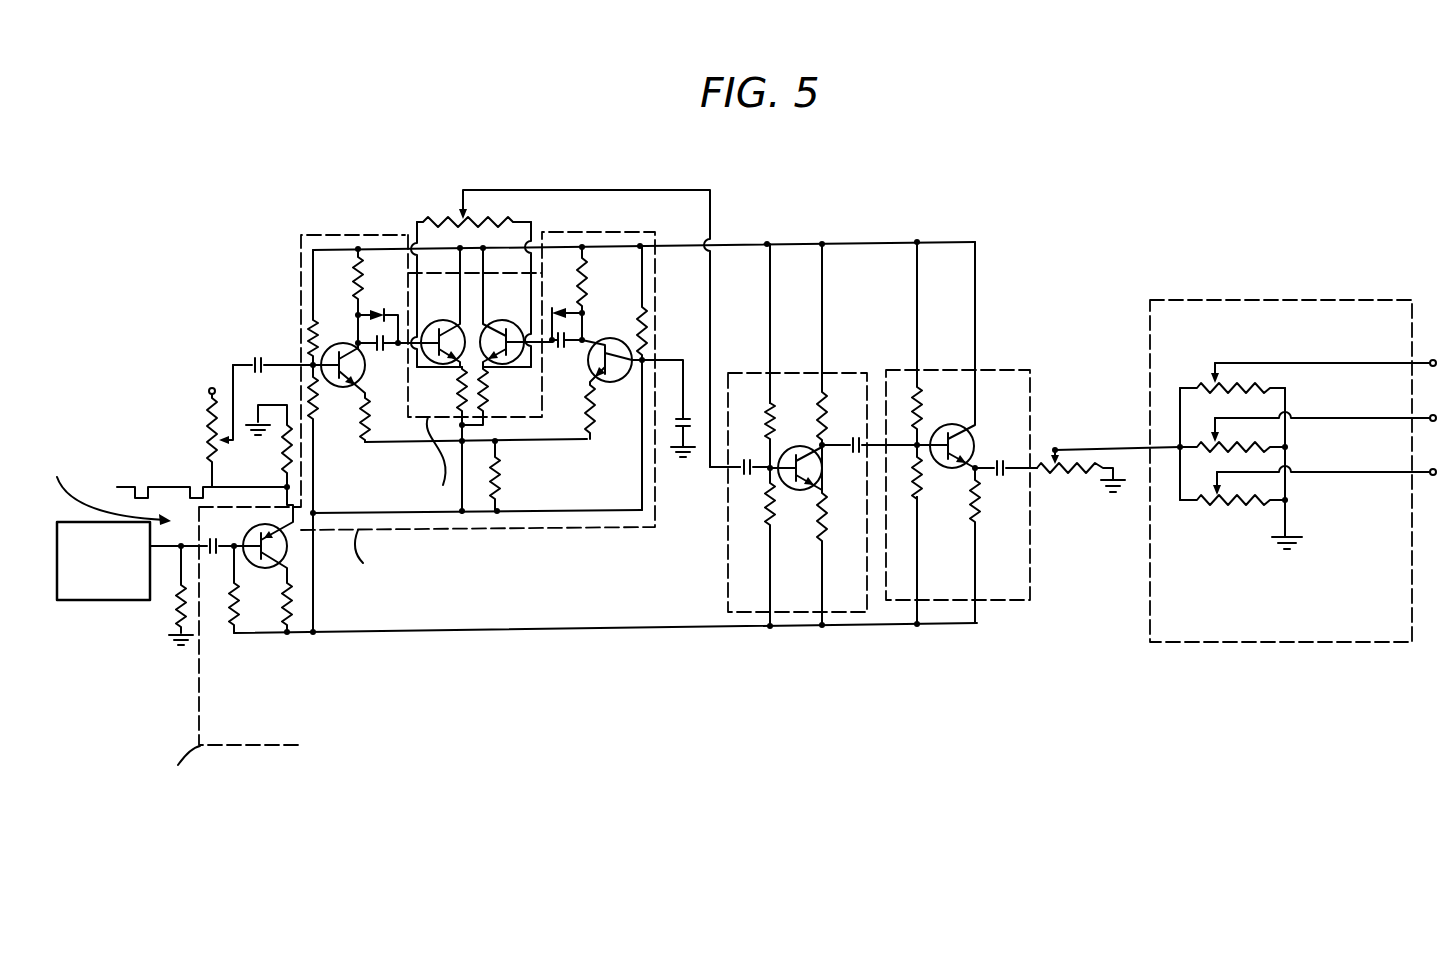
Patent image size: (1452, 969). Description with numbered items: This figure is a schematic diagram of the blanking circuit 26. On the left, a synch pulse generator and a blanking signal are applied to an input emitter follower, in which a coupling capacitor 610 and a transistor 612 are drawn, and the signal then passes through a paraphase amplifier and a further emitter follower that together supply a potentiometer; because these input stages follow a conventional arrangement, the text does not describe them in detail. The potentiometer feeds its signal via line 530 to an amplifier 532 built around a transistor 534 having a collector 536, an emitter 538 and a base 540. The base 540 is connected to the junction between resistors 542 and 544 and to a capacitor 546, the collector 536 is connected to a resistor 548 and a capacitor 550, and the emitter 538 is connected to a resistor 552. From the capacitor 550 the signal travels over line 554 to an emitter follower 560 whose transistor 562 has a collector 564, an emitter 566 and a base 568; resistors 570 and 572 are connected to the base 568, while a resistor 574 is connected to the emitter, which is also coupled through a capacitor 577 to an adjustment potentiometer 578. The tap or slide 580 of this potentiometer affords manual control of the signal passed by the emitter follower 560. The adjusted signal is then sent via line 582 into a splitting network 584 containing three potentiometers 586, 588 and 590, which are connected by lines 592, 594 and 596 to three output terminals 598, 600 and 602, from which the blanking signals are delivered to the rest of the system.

The blanking circuit 26 is at (840, 752).
The line 530 is at (711, 296).
The amplifier 532 is at (731, 585).
The transistor 534 is at (791, 424).
The collector 536 is at (821, 460).
The emitter 538 is at (822, 483).
The base 540 is at (800, 440).
The resistor 542 is at (777, 515).
The resistor 544 is at (764, 420).
The capacitor 546 is at (748, 480).
The resistor 548 is at (835, 405).
The capacitor 550 is at (852, 437).
The resistor 552 is at (822, 548).
The line 554 is at (862, 436).
The emitter follower 560 is at (1077, 655).
The transistor 562 is at (975, 430).
The collector 564 is at (974, 441).
The emitter 566 is at (942, 472).
The base 568 is at (956, 424).
The resistor 570 is at (917, 400).
The resistor 572 is at (919, 493).
The resistor 574 is at (978, 512).
The capacitor 577 is at (1006, 483).
The potentiometer 578 is at (1068, 472).
The tap or slide 580 is at (1053, 451).
The line 582 is at (1128, 444).
The splitting network 584 is at (1281, 471).
The potentiometer 586 is at (1208, 382).
The potentiometer 588 is at (1230, 452).
The potentiometer 590 is at (1230, 508).
The line 592 is at (1358, 358).
The line 594 is at (1358, 412).
The line 596 is at (1362, 468).
The output terminal 598 is at (1433, 346).
The output terminal 600 is at (1433, 400).
The output terminal 602 is at (1433, 455).
The coupling capacitor 610 is at (228, 534).
The transistor 612 is at (252, 567).